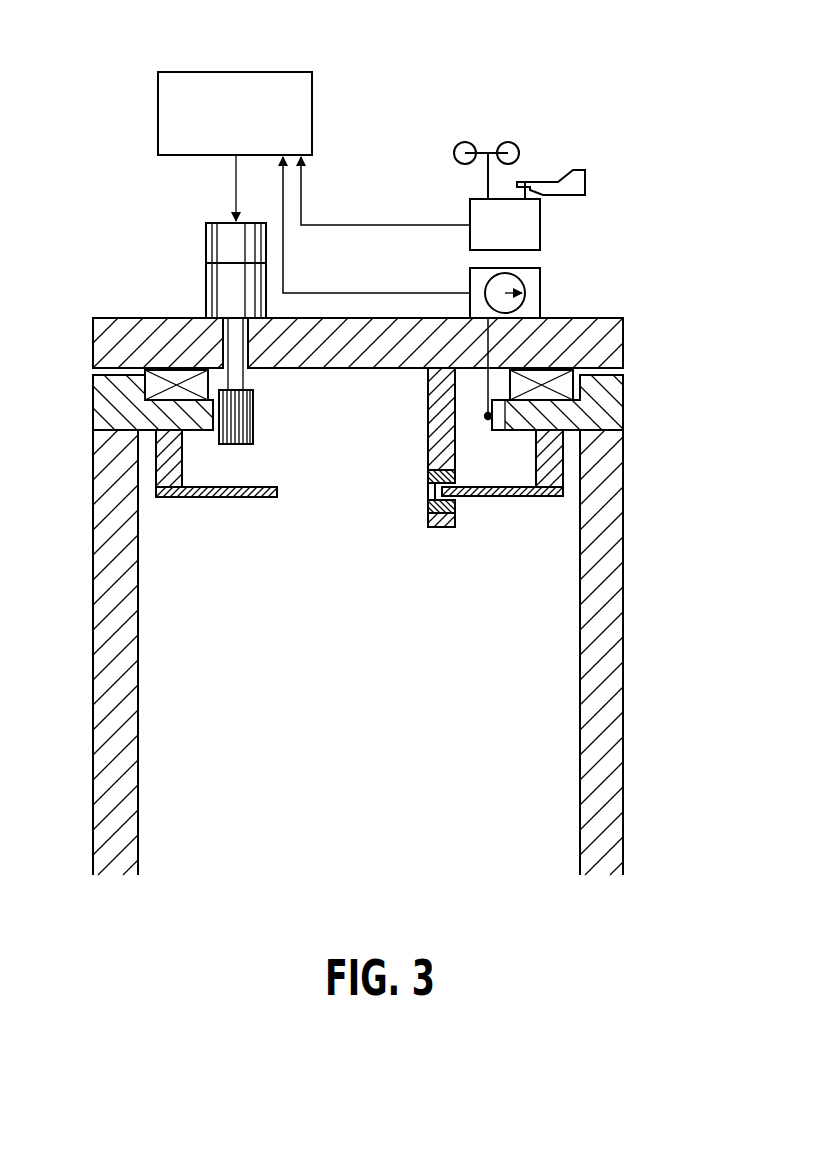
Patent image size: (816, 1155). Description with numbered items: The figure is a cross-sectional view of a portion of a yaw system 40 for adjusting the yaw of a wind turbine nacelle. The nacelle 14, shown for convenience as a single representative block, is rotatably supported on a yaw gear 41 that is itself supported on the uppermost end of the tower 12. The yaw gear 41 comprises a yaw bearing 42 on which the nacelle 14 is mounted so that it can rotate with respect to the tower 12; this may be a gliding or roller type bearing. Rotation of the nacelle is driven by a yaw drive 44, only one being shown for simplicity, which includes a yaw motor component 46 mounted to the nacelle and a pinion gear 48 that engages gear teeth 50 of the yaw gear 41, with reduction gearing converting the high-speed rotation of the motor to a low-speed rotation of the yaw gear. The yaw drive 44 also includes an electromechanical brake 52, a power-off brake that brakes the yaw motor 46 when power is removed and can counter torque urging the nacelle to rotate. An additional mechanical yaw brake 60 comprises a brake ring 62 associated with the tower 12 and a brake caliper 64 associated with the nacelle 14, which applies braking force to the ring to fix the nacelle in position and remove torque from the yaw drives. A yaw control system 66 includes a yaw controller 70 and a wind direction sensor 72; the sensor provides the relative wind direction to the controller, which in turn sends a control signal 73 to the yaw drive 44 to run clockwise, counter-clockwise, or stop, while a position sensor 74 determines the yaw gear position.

The tower 12 is at (623, 740).
The nacelle 14 is at (623, 343).
The yaw system 40 is at (542, 38).
The yaw gear 41 is at (623, 397).
The yaw bearing 42 is at (150, 387).
The yaw drive 44 is at (138, 268).
The yaw motor component 46 is at (206, 290).
The pinion gear 48 is at (254, 404).
The gear teeth 50 is at (213, 416).
The brake 52 is at (206, 242).
The yaw brake 60 is at (462, 550).
The brake ring 62 is at (515, 497).
The brake caliper 64 is at (428, 450).
The yaw control system 66 is at (108, 116).
The yaw controller 70 is at (187, 70).
The wind direction sensor 72 is at (540, 225).
The control signal 73 is at (236, 183).
The position sensor 74 is at (540, 293).